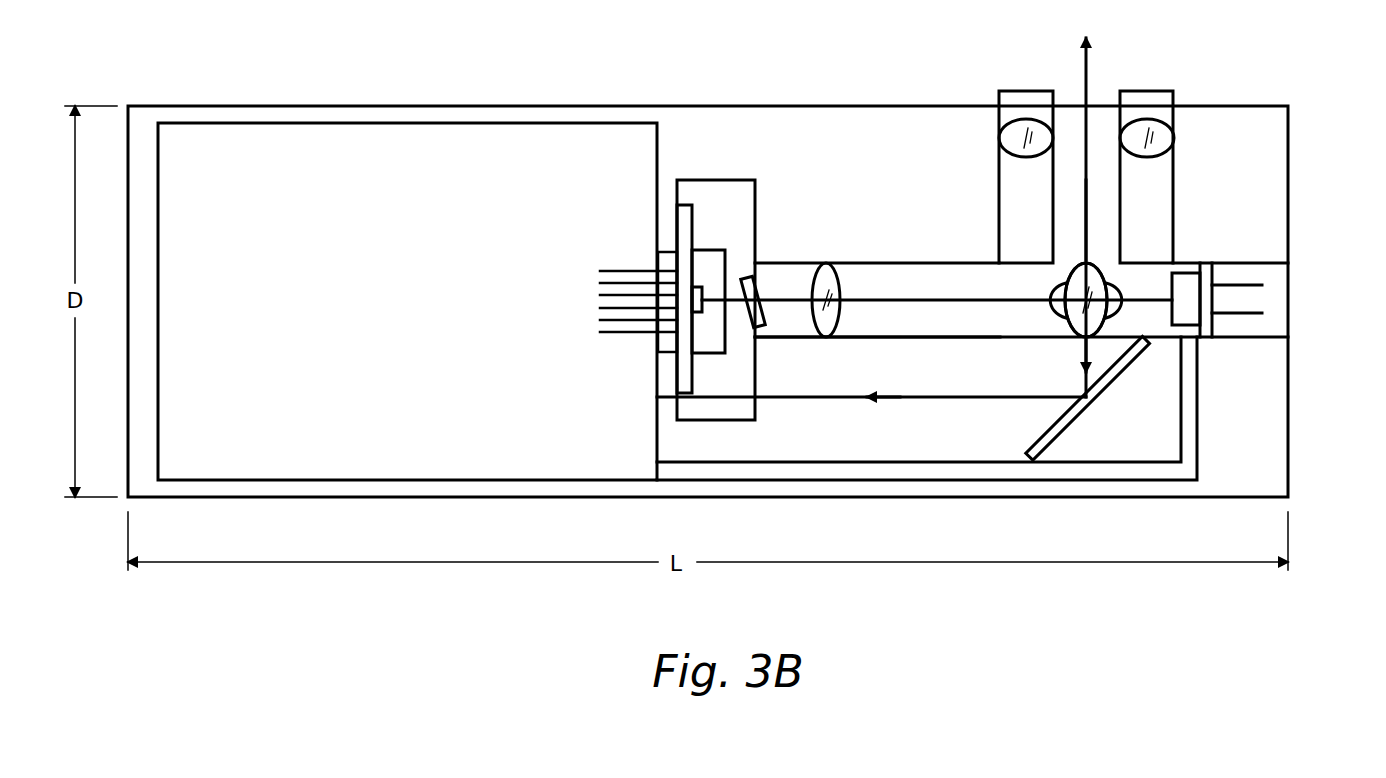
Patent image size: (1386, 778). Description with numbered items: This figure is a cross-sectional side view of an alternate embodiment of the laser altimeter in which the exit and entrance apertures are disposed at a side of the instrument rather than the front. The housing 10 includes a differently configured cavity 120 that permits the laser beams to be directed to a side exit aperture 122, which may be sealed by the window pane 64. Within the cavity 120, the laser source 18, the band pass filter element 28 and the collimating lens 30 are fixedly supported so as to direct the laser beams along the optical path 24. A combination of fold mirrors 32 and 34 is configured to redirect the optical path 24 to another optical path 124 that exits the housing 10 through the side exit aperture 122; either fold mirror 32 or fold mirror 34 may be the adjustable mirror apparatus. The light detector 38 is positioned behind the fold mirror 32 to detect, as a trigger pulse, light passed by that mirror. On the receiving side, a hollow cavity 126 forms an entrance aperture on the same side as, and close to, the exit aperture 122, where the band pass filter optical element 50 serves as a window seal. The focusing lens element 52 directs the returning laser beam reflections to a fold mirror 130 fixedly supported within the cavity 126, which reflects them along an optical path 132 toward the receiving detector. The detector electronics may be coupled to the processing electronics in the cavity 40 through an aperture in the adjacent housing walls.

The housing 10 is at (1285, 476).
The laser source 18 is at (710, 255).
The optical path 24 is at (887, 302).
The band pass filter element 28 is at (757, 290).
The collimating lens 30 is at (836, 284).
The fold mirror 32 is at (1064, 318).
The fold mirror 34 is at (1086, 300).
The light detector 38 is at (1193, 250).
The cavity 40 is at (360, 145).
The band pass filter optical element 50 is at (1175, 97).
The focusing lens element 52 is at (1150, 158).
The window pane 64 is at (1070, 96).
The cavity 120 is at (942, 330).
The side exit aperture 122 is at (1104, 148).
The optical path 124 is at (1086, 216).
The hollow cavity 126 is at (1165, 404).
The fold mirror 130 is at (1105, 401).
The optical path 132 is at (840, 399).